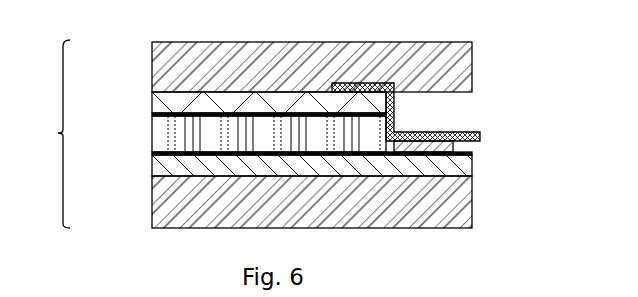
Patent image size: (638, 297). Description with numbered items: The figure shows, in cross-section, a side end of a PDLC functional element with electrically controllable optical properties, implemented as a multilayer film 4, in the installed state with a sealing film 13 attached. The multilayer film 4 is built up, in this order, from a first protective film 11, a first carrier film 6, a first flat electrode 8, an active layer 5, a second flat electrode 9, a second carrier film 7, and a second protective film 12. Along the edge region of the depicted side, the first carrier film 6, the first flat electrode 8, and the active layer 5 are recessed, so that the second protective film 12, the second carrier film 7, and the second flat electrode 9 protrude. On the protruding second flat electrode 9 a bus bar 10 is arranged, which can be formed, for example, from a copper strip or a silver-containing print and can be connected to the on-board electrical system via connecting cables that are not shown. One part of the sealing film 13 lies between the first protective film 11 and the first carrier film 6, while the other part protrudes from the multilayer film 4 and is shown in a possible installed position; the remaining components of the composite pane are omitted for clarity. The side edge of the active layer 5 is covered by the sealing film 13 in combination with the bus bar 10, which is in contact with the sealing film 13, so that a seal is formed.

The multilayer film 4 is at (54, 134).
The active layer 5 is at (153, 134).
The first carrier film 6 is at (153, 102).
The second carrier film 7 is at (153, 166).
The first flat electrode 8 is at (153, 113).
The second flat electrode 9 is at (153, 153).
The bus bar 10 is at (453, 146).
The first protective film 11 is at (153, 65).
The second protective film 12 is at (153, 202).
The sealing film 13 is at (394, 111).